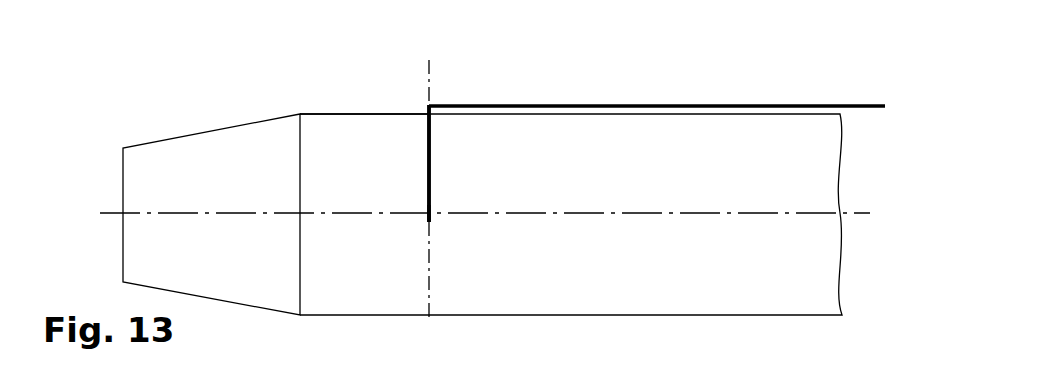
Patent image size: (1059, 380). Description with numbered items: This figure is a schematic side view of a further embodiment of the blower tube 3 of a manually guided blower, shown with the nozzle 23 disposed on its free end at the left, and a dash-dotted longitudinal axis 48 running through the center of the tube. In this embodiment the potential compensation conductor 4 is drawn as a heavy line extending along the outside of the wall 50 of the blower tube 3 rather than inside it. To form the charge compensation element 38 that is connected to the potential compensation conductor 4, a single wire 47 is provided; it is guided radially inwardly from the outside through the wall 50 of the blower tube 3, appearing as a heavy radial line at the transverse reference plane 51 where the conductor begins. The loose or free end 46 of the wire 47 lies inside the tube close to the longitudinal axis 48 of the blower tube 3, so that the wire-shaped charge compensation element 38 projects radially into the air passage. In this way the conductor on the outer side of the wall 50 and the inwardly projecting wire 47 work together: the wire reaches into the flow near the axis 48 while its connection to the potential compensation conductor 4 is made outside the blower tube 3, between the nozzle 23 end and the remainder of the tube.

The blower tube 3 is at (508, 316).
The nozzle 23 is at (211, 131).
The potential compensation conductor 4 is at (695, 105).
The wall 50 is at (352, 110).
The reference plane 51 is at (429, 83).
The wire 47 is at (423, 163).
The charge compensation element 38 is at (429, 192).
The free end 46 is at (437, 218).
The longitudinal axis 48 is at (670, 214).